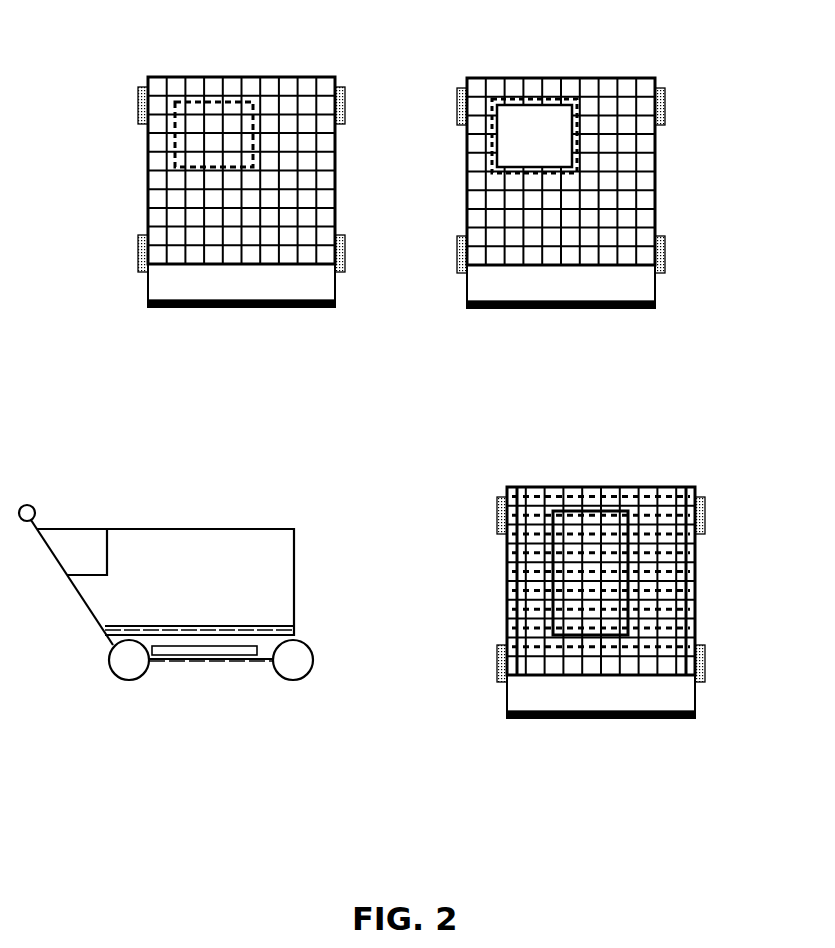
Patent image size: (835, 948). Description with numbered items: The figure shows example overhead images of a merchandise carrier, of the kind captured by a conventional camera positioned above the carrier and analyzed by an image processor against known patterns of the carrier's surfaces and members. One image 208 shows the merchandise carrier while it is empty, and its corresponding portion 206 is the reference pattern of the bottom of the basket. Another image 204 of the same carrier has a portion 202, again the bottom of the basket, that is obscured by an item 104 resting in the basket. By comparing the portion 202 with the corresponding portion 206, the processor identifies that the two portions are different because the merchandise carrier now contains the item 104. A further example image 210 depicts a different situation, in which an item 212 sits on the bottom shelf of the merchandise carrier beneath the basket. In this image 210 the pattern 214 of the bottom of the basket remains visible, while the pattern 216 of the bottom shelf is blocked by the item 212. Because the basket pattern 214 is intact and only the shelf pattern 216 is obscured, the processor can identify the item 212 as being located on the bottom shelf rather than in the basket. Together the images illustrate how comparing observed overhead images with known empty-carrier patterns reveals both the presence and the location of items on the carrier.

The item 104 is at (556, 146).
The portion 202 is at (545, 85).
The image 204 is at (665, 48).
The corresponding portion 206 is at (258, 100).
The image 208 is at (125, 58).
The example image 210 is at (618, 560).
The item 212 is at (568, 573).
The pattern 214 is at (543, 497).
The pattern 216 is at (589, 500).